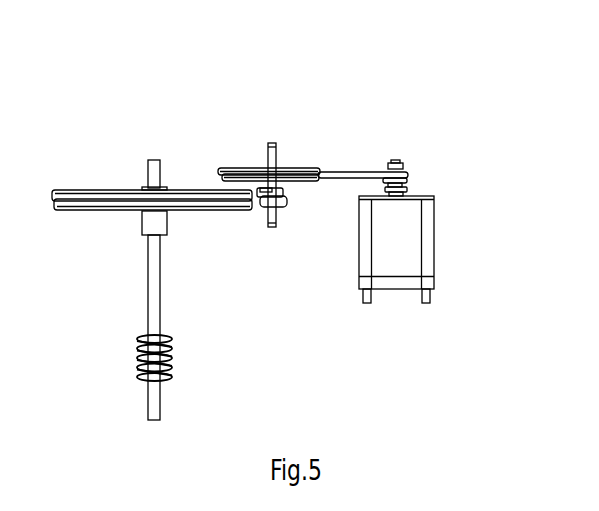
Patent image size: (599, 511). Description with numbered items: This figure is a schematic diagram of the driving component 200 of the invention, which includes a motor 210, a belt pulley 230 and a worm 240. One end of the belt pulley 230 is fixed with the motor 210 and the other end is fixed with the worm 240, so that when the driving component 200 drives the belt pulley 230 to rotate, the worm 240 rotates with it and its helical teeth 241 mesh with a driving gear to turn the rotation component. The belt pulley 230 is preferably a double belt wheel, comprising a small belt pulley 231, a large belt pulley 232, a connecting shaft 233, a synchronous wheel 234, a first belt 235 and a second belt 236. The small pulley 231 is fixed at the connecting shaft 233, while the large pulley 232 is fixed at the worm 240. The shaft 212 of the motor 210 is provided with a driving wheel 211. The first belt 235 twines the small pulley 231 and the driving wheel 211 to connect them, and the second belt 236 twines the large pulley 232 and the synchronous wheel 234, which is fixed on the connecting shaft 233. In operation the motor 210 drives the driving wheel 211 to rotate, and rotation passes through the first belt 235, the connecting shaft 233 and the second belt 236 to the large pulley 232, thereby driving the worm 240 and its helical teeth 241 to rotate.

The driving component 200 is at (428, 110).
The motor 210 is at (390, 260).
The driving wheel 211 is at (405, 167).
The shaft 212 is at (401, 162).
The belt pulley 230 is at (363, 74).
The small belt pulley 231 is at (235, 168).
The large belt pulley 232 is at (123, 189).
The connecting shaft 233 is at (273, 153).
The synchronous wheel 234 is at (258, 188).
The first belt 235 is at (343, 171).
The second belt 236 is at (245, 200).
The worm 240 is at (153, 288).
The helical teeth 241 is at (135, 367).